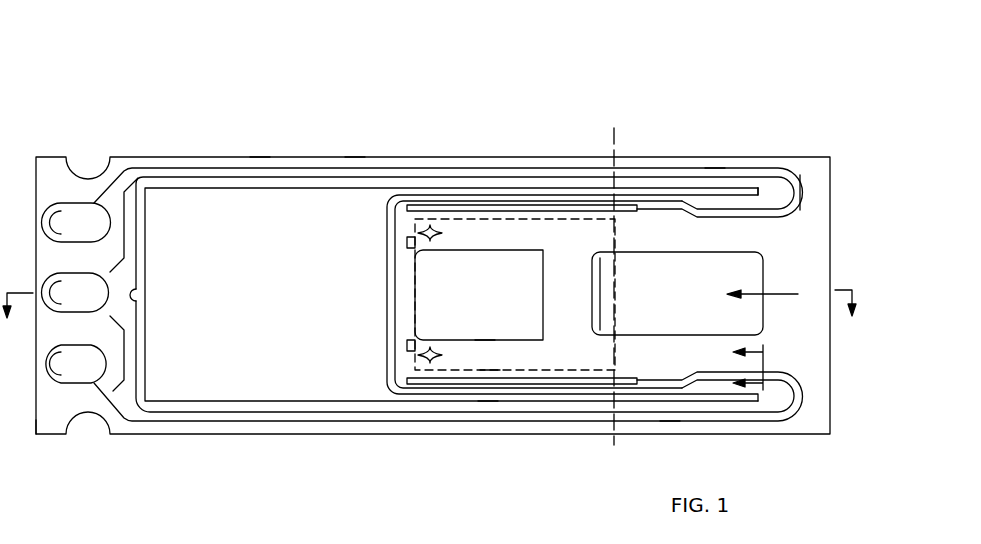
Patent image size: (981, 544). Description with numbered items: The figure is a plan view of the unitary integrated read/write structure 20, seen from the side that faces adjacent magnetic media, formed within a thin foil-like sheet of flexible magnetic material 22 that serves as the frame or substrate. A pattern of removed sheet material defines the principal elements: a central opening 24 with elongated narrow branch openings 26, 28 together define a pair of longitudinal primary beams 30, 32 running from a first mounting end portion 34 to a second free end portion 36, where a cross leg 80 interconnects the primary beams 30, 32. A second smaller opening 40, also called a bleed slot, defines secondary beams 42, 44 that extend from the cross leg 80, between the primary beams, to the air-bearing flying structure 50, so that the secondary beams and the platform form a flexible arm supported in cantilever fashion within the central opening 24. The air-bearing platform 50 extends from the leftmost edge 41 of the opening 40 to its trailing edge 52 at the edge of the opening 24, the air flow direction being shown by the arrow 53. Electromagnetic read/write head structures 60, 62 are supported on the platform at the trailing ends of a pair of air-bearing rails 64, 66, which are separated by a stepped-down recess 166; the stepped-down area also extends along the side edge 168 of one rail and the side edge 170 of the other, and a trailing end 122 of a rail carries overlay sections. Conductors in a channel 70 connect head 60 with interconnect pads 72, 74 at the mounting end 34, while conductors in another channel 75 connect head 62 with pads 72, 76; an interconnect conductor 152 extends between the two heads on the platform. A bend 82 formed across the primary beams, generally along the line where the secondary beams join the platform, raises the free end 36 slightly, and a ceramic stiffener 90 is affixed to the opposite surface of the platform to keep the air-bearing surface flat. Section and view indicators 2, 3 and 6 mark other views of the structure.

The integrated read/write structure 20 is at (321, 140).
The magnetic sheet material 22 is at (258, 157).
The central opening 24 is at (205, 401).
The narrow branch opening 26 is at (487, 402).
The narrow branch opening 28 is at (596, 190).
The primary beam 30 is at (352, 163).
The primary beam 32 is at (428, 434).
The first mounting end portion 34 is at (53, 432).
The second free end portion 36 is at (812, 428).
The opening (bleed slot) 40 is at (660, 252).
The leftmost edge of opening 41 is at (604, 292).
The secondary beam 42 is at (712, 230).
The secondary beam 44 is at (670, 374).
The air-bearing flying structure 50 is at (486, 203).
The trailing edge 52 is at (387, 297).
The arrow 53 is at (778, 294).
The electromagnetic read/write head structure 60 is at (407, 346).
The electromagnetic read/write head structure 62 is at (406, 242).
The air-bearing rail 64 is at (484, 352).
The air-bearing rail 66 is at (507, 233).
The conductor channel 70 is at (232, 413).
The interconnect pad 72 is at (60, 292).
The interconnect pad 74 is at (78, 376).
The conductor channel 75 is at (219, 172).
The interconnect pad 76 is at (67, 218).
The cross leg 80 is at (820, 228).
The bend 82 is at (618, 420).
The stiffener 90 is at (489, 368).
The trailing end of rail 122 is at (412, 230).
The interconnect conductor 152 is at (394, 268).
The stepped-down recess 166 is at (460, 304).
The side edge of rail 168 is at (460, 384).
The side edge of rail 170 is at (445, 208).
The section line 2- 2 is at (431, 318).
The view direction 3 is at (384, 401).
The view direction 6 is at (757, 367).